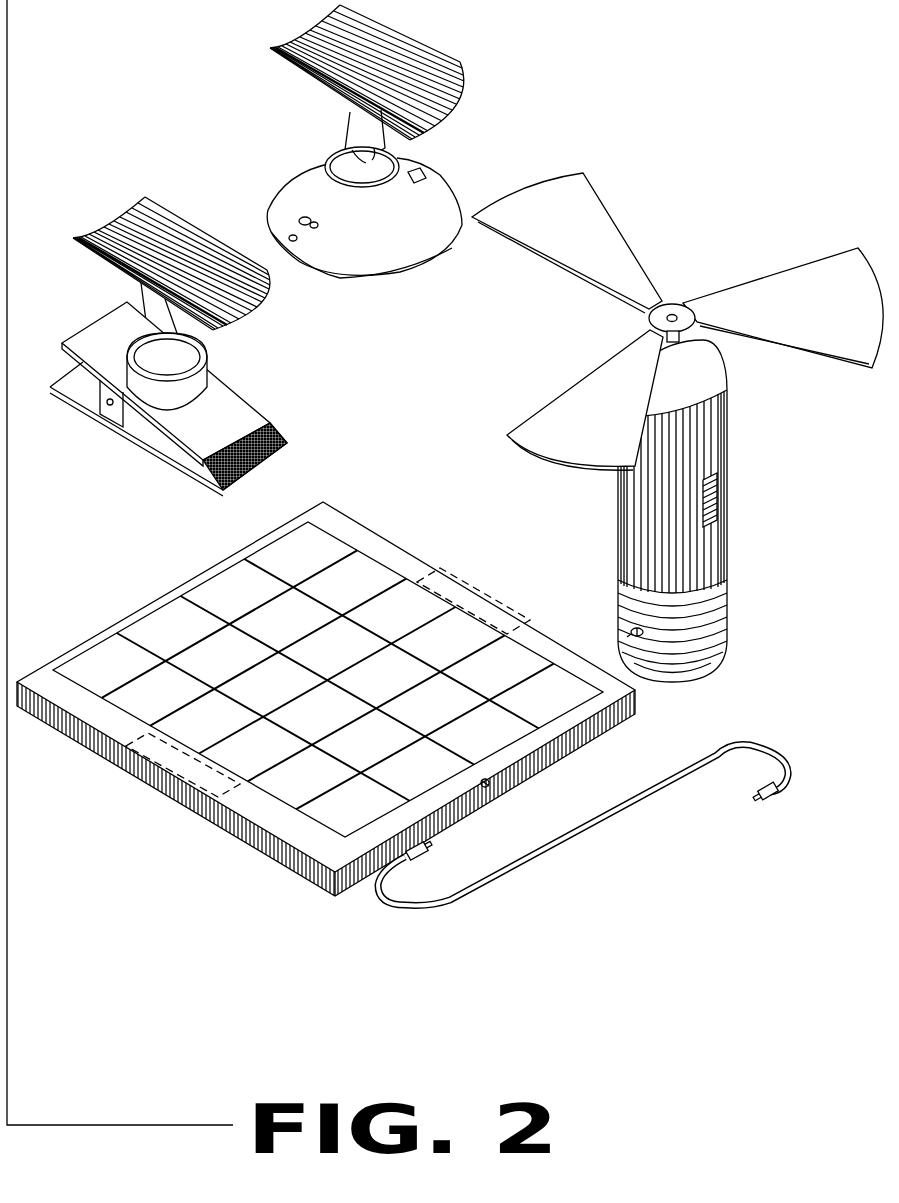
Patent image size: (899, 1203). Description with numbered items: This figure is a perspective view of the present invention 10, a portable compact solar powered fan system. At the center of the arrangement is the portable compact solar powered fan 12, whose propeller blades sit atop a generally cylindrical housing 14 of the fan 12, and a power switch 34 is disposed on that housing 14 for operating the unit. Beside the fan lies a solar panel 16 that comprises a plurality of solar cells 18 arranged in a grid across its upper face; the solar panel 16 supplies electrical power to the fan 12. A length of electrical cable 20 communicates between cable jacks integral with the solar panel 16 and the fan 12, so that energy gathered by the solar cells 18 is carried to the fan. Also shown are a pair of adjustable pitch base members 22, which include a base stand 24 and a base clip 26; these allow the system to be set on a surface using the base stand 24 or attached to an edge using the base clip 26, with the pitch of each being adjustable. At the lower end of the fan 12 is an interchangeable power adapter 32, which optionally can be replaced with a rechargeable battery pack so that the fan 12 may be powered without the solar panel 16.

The present invention 10 is at (677, 348).
The portable compact solar powered fan 12 is at (618, 517).
The housing 14 is at (729, 424).
The solar panel 16 is at (172, 795).
The solar cells 18 is at (318, 548).
The electrical cable 20 is at (588, 836).
The adjustable pitch base members 22 is at (208, 234).
The base stand 24 is at (373, 282).
The base clip 26 is at (245, 393).
The interchangeable power adapter 32 is at (728, 633).
The power switch 34 is at (728, 498).